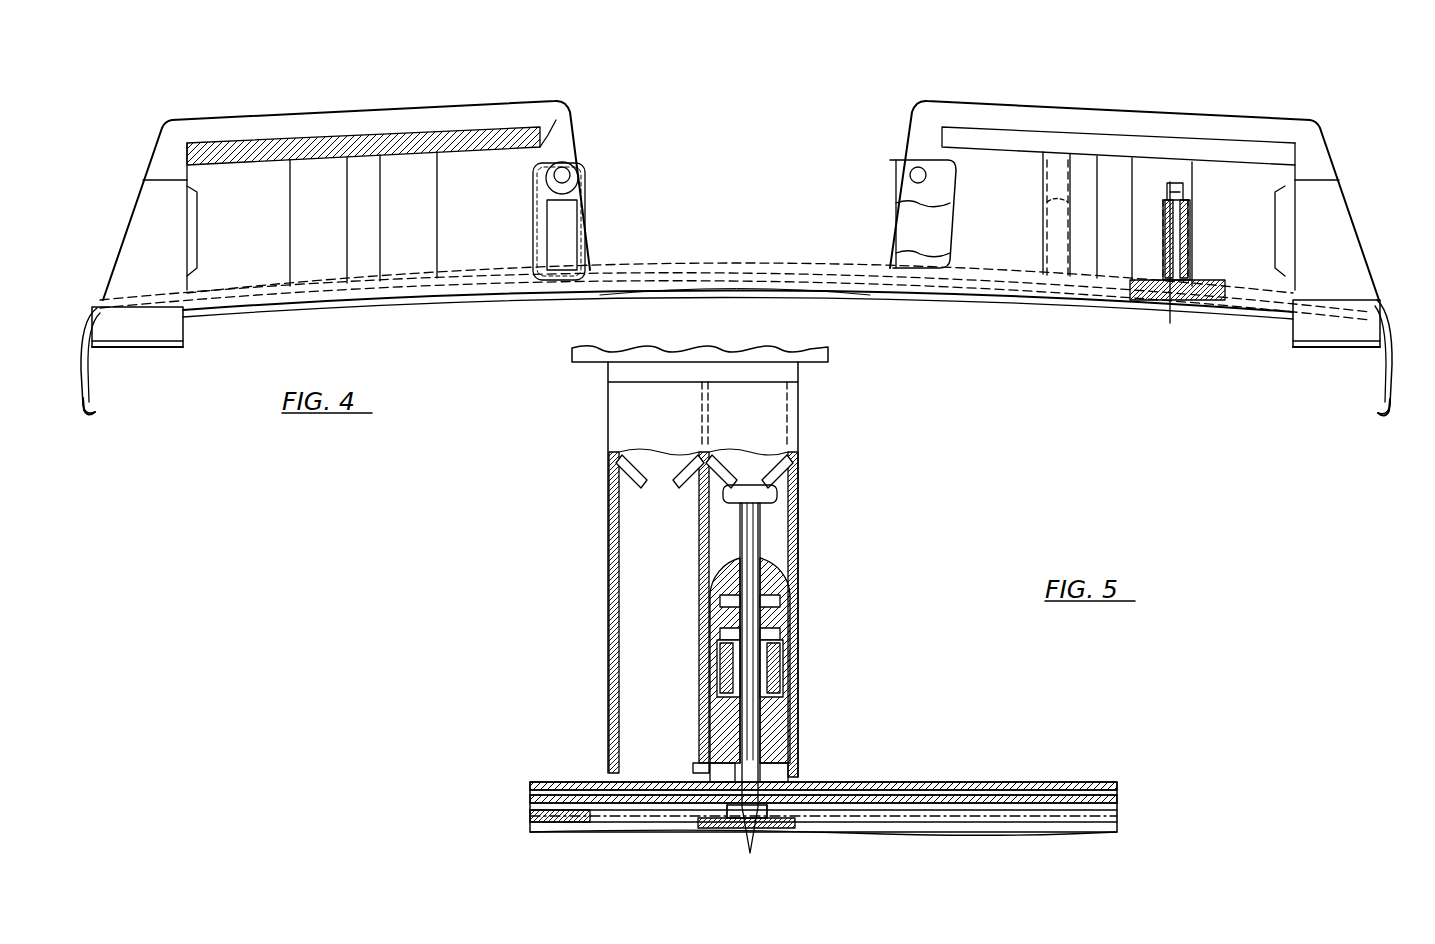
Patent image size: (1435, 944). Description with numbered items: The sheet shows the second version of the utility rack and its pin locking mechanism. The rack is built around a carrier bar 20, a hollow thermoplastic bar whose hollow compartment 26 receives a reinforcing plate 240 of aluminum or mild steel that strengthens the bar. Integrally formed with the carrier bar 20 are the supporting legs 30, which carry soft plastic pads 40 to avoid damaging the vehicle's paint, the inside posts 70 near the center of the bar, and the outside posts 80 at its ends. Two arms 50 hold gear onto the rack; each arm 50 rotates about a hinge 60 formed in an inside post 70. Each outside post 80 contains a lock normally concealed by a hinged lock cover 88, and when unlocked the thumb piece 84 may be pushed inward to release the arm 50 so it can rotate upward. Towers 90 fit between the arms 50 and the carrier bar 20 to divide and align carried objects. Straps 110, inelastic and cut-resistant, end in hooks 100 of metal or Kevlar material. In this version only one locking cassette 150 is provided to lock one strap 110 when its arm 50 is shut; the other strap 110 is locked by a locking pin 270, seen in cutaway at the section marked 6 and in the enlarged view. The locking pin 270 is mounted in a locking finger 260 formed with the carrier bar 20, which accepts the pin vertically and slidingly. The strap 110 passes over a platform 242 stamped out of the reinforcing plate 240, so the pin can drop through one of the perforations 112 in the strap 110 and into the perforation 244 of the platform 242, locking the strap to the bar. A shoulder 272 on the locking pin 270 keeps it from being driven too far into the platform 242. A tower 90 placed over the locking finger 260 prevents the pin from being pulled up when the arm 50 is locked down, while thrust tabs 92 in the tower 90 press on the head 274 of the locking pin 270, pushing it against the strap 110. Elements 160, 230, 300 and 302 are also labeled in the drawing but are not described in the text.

In FIG. 4, the section line 6- 6 is at (1168, 182).
In FIG. 4, the carrier bar 20 is at (763, 268).
In FIG. 5, the carrier bar 20 is at (1069, 780).
In FIG. 5, the hollow compartment 26 is at (880, 827).
In FIG. 4, the supporting legs 30 is at (183, 327).
In FIG. 4, the pads 40 is at (175, 348).
In FIG. 4, the arms 50 is at (460, 113).
In FIG. 4, the hinge 60 is at (578, 166).
In FIG. 4, the inside posts 70 is at (585, 209).
In FIG. 4, the outside posts 80 is at (130, 223).
In FIG. 4, the thumb piece 84 is at (135, 192).
In FIG. 4, the hinged lock cover 88 is at (100, 298).
In FIG. 4, the towers 90 is at (290, 236).
In FIG. 5, the towers 90 is at (610, 493).
In FIG. 5, the thrust tabs 92 is at (653, 455).
In FIG. 4, the hooks 100 is at (93, 410).
In FIG. 4, the straps 110 is at (85, 356).
In FIG. 5, the straps 110 is at (1120, 807).
In FIG. 5, the perforations 112 is at (733, 820).
In FIG. 4, the locking cassette 150 is at (570, 230).
In FIG. 4, the boss 160 is at (583, 186).
In FIG. 4, the end cap 230 is at (762, 286).
In FIG. 5, the end cap 230 is at (528, 818).
In FIG. 5, the reinforcing plate 240 is at (1120, 798).
In FIG. 5, the platform 242 is at (783, 827).
In FIG. 5, the perforation 244 is at (737, 830).
In FIG. 4, the locking finger 260 is at (1197, 260).
In FIG. 5, the locking finger 260 is at (790, 710).
In FIG. 4, the locking pin 270 is at (1192, 193).
In FIG. 5, the locking pin 270 is at (767, 748).
In FIG. 5, the shoulder 272 is at (700, 780).
In FIG. 5, the head 274 is at (777, 493).
In FIG. 5, the insulating layer 300 is at (993, 787).
In FIG. 5, the outer layer 302 is at (888, 782).